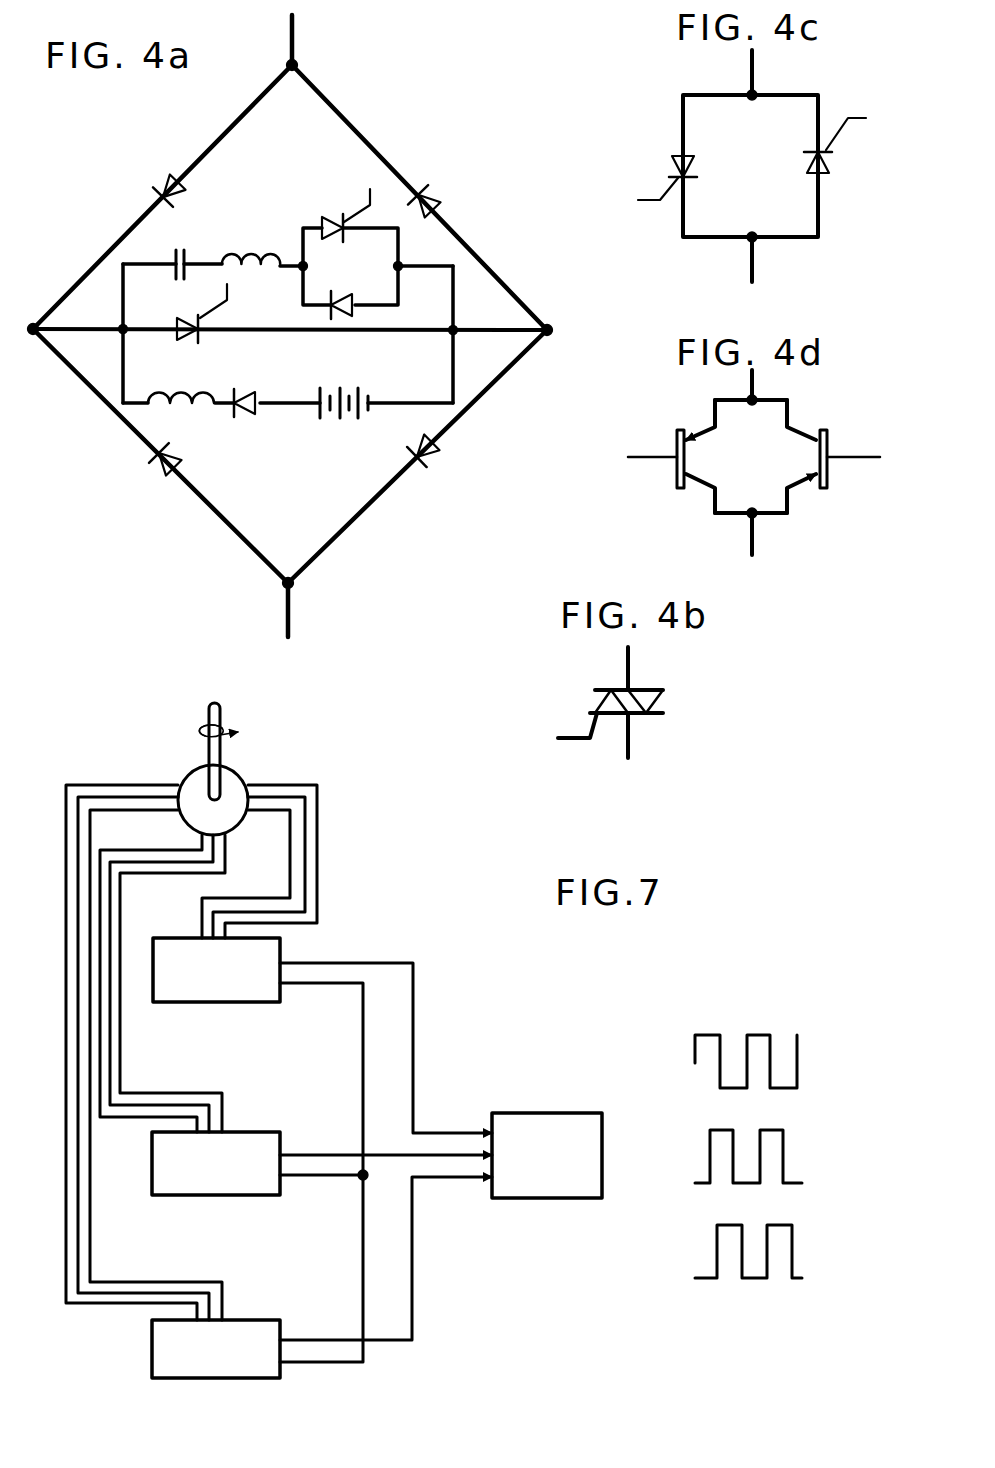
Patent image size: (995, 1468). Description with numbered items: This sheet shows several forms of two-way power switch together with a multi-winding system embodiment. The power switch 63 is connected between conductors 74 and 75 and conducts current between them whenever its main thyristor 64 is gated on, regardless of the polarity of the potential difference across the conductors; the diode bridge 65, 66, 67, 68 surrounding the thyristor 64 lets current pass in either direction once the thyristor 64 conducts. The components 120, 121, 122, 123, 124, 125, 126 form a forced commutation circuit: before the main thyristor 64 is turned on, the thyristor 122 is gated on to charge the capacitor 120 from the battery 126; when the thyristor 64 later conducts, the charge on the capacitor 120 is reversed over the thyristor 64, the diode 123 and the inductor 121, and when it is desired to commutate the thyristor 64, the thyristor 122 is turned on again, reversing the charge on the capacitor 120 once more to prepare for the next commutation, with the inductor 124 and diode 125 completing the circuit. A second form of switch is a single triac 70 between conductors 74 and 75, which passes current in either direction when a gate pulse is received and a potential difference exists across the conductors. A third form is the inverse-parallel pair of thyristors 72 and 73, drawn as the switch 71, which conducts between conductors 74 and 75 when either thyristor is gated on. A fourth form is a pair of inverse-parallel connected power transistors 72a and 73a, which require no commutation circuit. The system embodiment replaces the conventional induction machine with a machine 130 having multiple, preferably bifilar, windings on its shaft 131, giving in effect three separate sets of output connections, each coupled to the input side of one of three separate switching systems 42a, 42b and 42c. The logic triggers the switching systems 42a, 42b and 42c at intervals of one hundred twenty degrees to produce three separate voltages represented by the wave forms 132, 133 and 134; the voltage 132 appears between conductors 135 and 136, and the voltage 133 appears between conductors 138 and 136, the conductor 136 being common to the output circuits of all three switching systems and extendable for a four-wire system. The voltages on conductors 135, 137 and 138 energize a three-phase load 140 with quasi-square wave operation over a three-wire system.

In FIG. 4a, the power switch 63 is at (80, 452).
In FIG. 4a, the thyristor 64 is at (195, 313).
In FIG. 4a, the diode bridge 65 is at (159, 177).
In FIG. 4a, the diode bridge 66 is at (431, 459).
In FIG. 4a, the diode bridge 67 is at (158, 469).
In FIG. 4a, the diode bridge 68 is at (434, 189).
In FIG. 4b, the triac 70 is at (675, 700).
In FIG. 4c, the antiparallel thyristor pair 71 is at (766, 216).
In FIG. 4c, the thyristor 72 is at (667, 175).
In FIG. 4c, the thyristor 73 is at (835, 147).
In FIG. 4d, the transistor 72a is at (671, 456).
In FIG. 4d, the transistor 73a is at (838, 456).
In FIG. 4a, the conductor 74 is at (295, 33).
In FIG. 4c, the conductor 74 is at (754, 67).
In FIG. 4d, the conductor 74 is at (754, 383).
In FIG. 4b, the conductor 74 is at (630, 660).
In FIG. 4a, the conductor 75 is at (291, 597).
In FIG. 4c, the conductor 75 is at (754, 258).
In FIG. 4d, the conductor 75 is at (754, 530).
In FIG. 4b, the conductor 75 is at (630, 727).
In FIG. 4a, the capacitor 120 is at (181, 252).
In FIG. 4a, the inductor 121 is at (251, 244).
In FIG. 4a, the thyristor 122 is at (346, 212).
In FIG. 4a, the diode 123 is at (347, 293).
In FIG. 4a, the inductor 124 is at (181, 384).
In FIG. 4a, the diode 125 is at (251, 391).
In FIG. 4a, the battery 126 is at (344, 392).
In FIG. 7, the machine 130 is at (250, 775).
In FIG. 7, the shaft 131 is at (212, 748).
In FIG. 7, the wave form 132 is at (422, 1060).
In FIG. 7, the wave form 133 is at (433, 1148).
In FIG. 7, the wave form 134 is at (446, 1184).
In FIG. 7, the conductor 135 is at (356, 962).
In FIG. 7, the conductor 136 is at (362, 1090).
In FIG. 7, the conductor 137 is at (398, 1142).
In FIG. 7, the conductor 138 is at (413, 1303).
In FIG. 7, the three-phase load 140 is at (570, 1155).
In FIG. 7, the switching system 42a is at (216, 970).
In FIG. 7, the switching system 42b is at (216, 1163).
In FIG. 7, the switching system 42c is at (216, 1349).